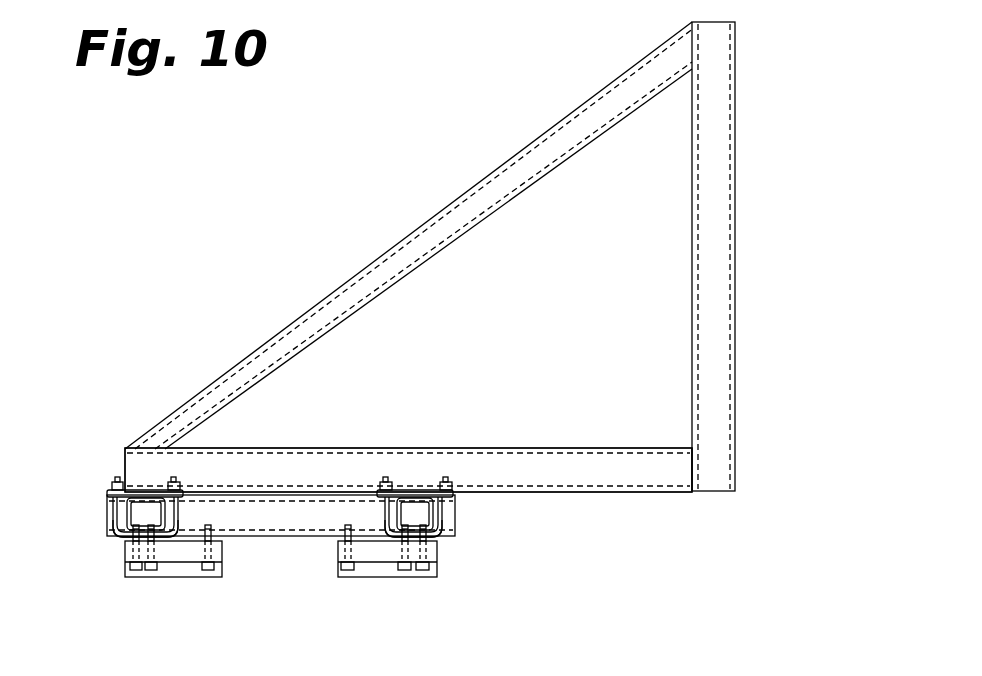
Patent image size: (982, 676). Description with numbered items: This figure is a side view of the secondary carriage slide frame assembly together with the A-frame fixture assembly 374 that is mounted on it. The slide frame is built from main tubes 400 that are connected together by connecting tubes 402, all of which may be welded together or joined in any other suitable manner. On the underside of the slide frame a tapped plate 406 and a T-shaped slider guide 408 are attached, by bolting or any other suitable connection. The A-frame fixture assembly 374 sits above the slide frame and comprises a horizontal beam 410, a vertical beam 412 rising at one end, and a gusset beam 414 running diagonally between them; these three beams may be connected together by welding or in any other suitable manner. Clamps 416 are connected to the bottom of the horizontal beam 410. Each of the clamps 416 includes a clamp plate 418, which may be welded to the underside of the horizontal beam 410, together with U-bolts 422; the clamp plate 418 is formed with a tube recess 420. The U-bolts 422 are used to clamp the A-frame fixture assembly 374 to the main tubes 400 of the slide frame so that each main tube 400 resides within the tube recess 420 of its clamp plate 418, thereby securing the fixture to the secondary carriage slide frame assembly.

The A-frame fixture assembly 374 is at (358, 232).
The vertical beam 412 is at (728, 225).
The gusset beam 414 is at (533, 155).
The horizontal beam 410 is at (660, 492).
The connecting tubes 402 is at (312, 508).
The clamps 416 is at (100, 505).
The clamp plate 418 is at (112, 498).
The tube recess 420 is at (133, 490).
The main tubes 400 is at (128, 512).
The U-bolts 422 is at (120, 535).
The tapped plate 406 is at (222, 541).
The T-shaped slider guide 408 is at (177, 555).